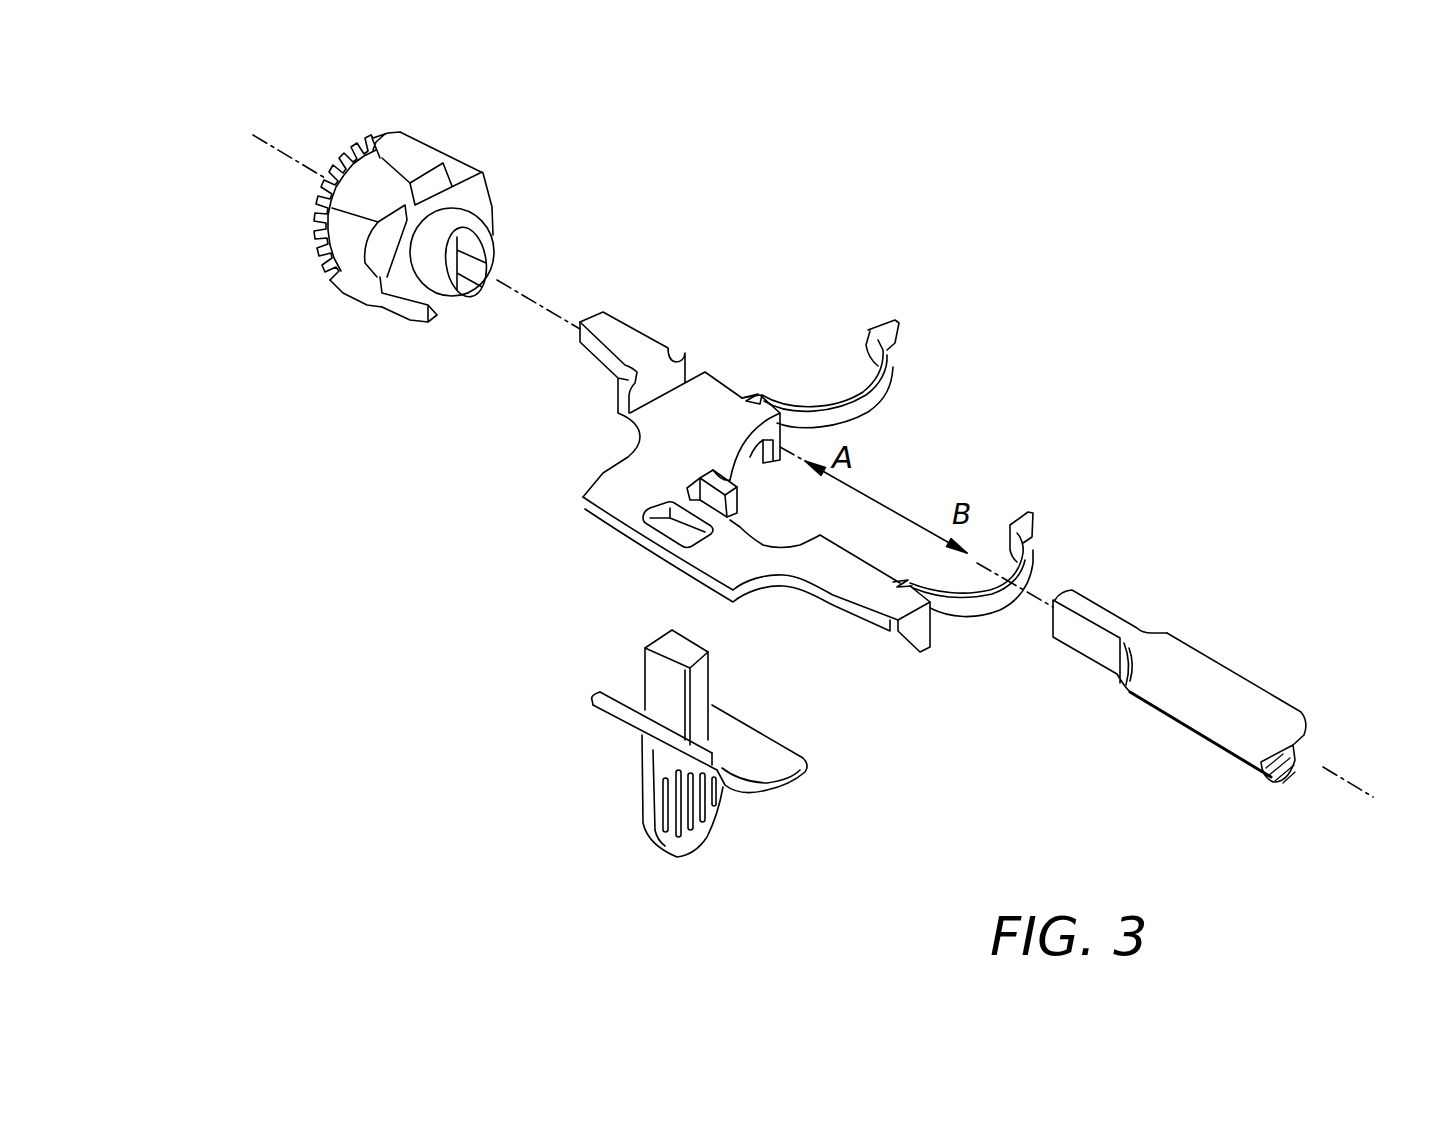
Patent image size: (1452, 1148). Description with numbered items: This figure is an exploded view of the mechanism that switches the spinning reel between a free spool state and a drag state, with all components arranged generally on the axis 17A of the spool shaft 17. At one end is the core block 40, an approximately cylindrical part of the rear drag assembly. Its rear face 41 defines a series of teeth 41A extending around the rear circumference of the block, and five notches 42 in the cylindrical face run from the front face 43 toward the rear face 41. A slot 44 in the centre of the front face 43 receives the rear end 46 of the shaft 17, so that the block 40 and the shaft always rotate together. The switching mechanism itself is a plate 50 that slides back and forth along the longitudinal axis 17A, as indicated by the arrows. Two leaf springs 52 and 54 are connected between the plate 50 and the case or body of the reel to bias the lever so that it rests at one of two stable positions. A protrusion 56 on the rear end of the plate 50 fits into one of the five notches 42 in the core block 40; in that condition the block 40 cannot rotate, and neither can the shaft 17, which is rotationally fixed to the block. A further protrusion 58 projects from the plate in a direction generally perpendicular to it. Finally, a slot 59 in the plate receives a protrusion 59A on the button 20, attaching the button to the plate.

The shaft 17 is at (1189, 660).
The axis 17A is at (540, 310).
The button 20 is at (686, 743).
The core block 40 is at (406, 293).
The rear face 41 is at (316, 223).
The teeth 41A is at (332, 125).
The notches 42 is at (422, 182).
The front face 43 is at (462, 202).
The slot 44 is at (470, 252).
The rear end 46 is at (1093, 613).
The plate 50 is at (840, 456).
The leaf spring 52 is at (1022, 560).
The leaf spring 54 is at (877, 390).
The protrusion 56 is at (627, 333).
The protrusion 58 is at (713, 498).
The slot 59 is at (677, 530).
The protrusion 59A is at (665, 682).